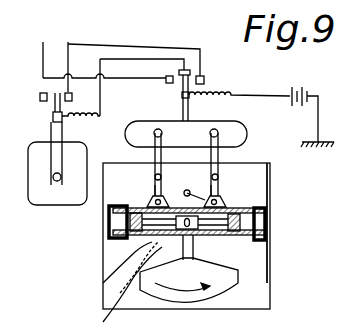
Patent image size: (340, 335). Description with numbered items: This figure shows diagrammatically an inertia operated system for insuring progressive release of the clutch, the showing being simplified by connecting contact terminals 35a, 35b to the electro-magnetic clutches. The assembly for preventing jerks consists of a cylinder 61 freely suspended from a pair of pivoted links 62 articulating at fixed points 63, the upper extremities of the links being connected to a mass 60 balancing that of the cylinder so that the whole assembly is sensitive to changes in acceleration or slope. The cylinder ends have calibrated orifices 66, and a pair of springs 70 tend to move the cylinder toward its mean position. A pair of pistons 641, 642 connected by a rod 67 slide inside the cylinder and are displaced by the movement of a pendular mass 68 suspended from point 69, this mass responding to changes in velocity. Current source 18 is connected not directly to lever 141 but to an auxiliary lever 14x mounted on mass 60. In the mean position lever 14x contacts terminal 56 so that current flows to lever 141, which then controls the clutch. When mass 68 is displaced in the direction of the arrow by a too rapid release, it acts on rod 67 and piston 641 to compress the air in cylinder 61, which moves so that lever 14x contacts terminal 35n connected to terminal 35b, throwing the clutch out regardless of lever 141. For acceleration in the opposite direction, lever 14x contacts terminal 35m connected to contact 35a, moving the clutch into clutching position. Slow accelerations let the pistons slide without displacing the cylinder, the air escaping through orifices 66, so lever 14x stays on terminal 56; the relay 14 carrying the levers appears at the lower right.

The contact terminal 35b is at (42, 93).
The contact terminal 35a is at (72, 97).
The terminal 35n is at (169, 76).
The terminal 35m is at (204, 80).
The terminal 56 is at (186, 70).
The lever 141 is at (60, 126).
The auxiliary lever 14x is at (183, 106).
The current source 18 is at (294, 90).
The mass 60 is at (201, 135).
The fixed points 63 is at (156, 177).
The suspension point 69 is at (188, 192).
The pivoted links 62 is at (218, 190).
The calibrated orifices 66 is at (266, 222).
The piston 642 is at (135, 243).
The piston 641 is at (237, 238).
The springs 70 is at (271, 246).
The pendular mass 68 is at (167, 292).
The rod 67 is at (121, 288).
The cylinder 61 is at (105, 284).
The relay 14 is at (338, 303).